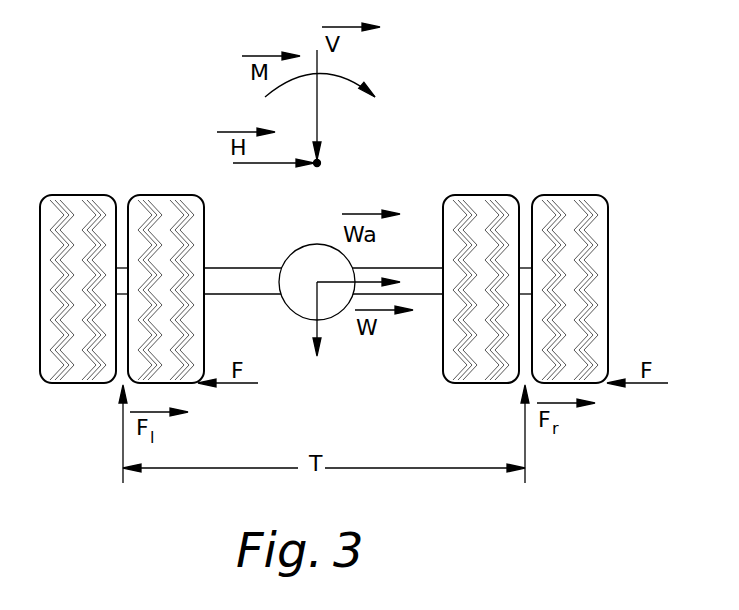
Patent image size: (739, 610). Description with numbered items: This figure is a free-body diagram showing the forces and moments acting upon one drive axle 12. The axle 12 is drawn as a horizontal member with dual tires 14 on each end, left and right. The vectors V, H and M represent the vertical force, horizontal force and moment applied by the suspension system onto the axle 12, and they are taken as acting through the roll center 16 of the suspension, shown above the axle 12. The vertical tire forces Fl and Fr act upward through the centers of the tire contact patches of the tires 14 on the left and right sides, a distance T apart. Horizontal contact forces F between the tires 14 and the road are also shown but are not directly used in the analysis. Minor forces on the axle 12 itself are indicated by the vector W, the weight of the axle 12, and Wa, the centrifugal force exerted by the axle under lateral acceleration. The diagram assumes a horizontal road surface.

The axle 12 is at (243, 294).
The tires 14 is at (75, 383).
The roll center 16 is at (320, 162).